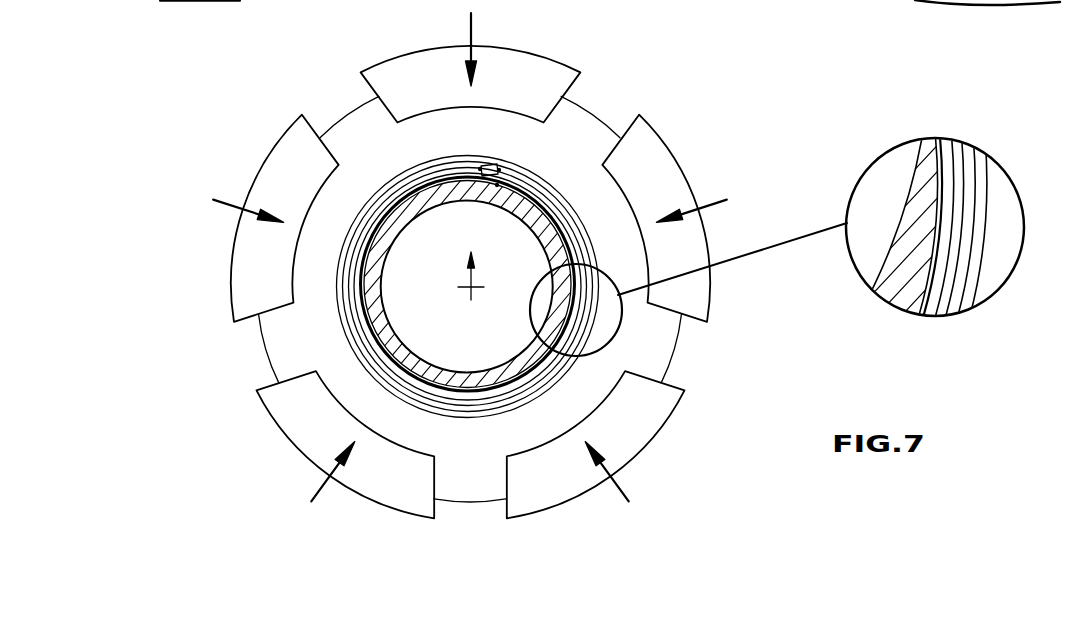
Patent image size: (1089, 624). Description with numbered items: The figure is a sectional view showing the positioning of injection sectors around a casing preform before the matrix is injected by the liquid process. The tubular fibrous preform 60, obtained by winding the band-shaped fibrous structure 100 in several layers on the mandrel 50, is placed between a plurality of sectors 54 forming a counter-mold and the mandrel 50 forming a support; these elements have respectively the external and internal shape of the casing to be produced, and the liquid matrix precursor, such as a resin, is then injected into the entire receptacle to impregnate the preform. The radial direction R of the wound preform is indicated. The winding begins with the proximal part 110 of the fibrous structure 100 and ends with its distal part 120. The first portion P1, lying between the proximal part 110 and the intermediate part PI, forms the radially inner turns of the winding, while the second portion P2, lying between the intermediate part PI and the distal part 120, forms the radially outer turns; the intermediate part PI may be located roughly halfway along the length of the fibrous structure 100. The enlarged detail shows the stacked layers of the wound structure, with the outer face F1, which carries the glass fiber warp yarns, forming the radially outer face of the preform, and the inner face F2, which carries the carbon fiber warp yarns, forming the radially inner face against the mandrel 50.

The mandrel 50 is at (470, 388).
The sectors 54 is at (545, 70).
The fibrous preform 60 is at (552, 178).
The fibrous structure 100 is at (404, 166).
The proximal part 110 is at (479, 178).
The distal part 120 is at (507, 161).
The intermediate part PI is at (480, 169).
The first portion P1 is at (497, 185).
The second portion P2 is at (499, 170).
The radial direction R is at (468, 278).
The outer face F1 is at (1005, 235).
The inner face F2 is at (933, 207).